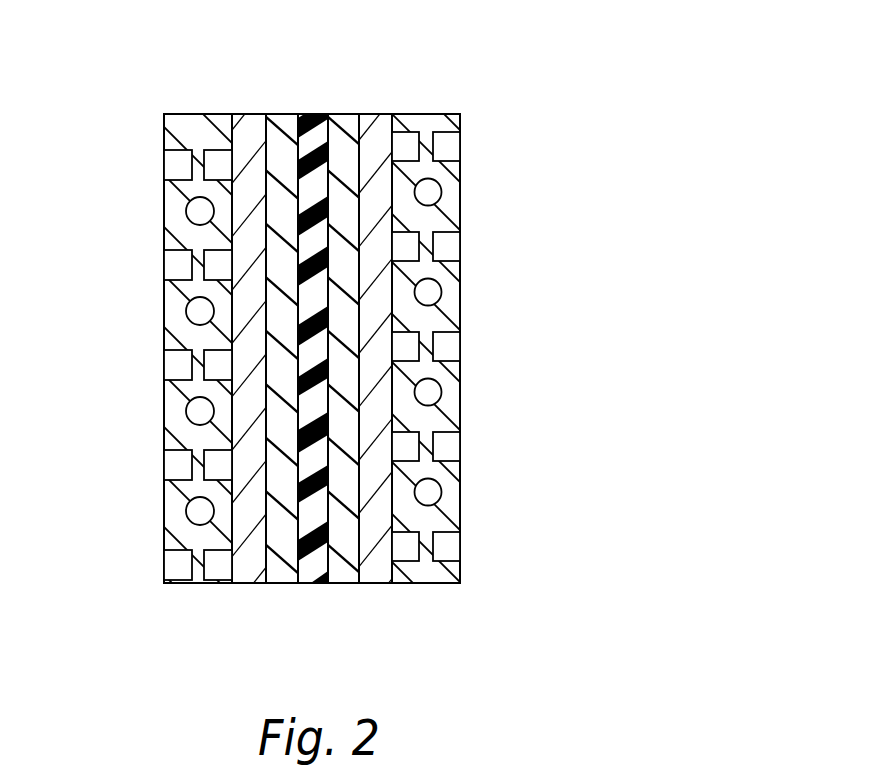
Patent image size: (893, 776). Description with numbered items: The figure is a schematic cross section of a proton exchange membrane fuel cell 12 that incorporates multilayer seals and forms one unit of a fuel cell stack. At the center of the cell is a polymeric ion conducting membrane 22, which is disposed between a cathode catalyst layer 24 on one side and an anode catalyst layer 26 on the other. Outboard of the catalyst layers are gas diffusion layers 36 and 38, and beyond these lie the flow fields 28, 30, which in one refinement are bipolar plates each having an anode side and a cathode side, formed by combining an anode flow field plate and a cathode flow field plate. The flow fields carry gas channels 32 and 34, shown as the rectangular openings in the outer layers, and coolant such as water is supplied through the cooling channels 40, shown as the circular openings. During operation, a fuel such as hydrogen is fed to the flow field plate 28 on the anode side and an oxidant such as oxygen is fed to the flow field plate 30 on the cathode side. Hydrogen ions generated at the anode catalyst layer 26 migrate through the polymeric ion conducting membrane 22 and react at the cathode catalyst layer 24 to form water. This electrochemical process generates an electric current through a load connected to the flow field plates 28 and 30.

The proton exchange membrane fuel cell 12 is at (92, 117).
The polymeric ion conducting membrane 22 is at (313, 318).
The cathode catalyst layer 24 is at (268, 304).
The anode catalyst layer 26 is at (361, 303).
The flow field plate 28 is at (450, 342).
The flow field plate 30 is at (182, 336).
The gas channel 32 is at (300, 356).
The gas channel 34 is at (304, 343).
The gas diffusion layer 36 is at (414, 314).
The gas diffusion layer 38 is at (219, 310).
The cooling channel 40 is at (308, 346).